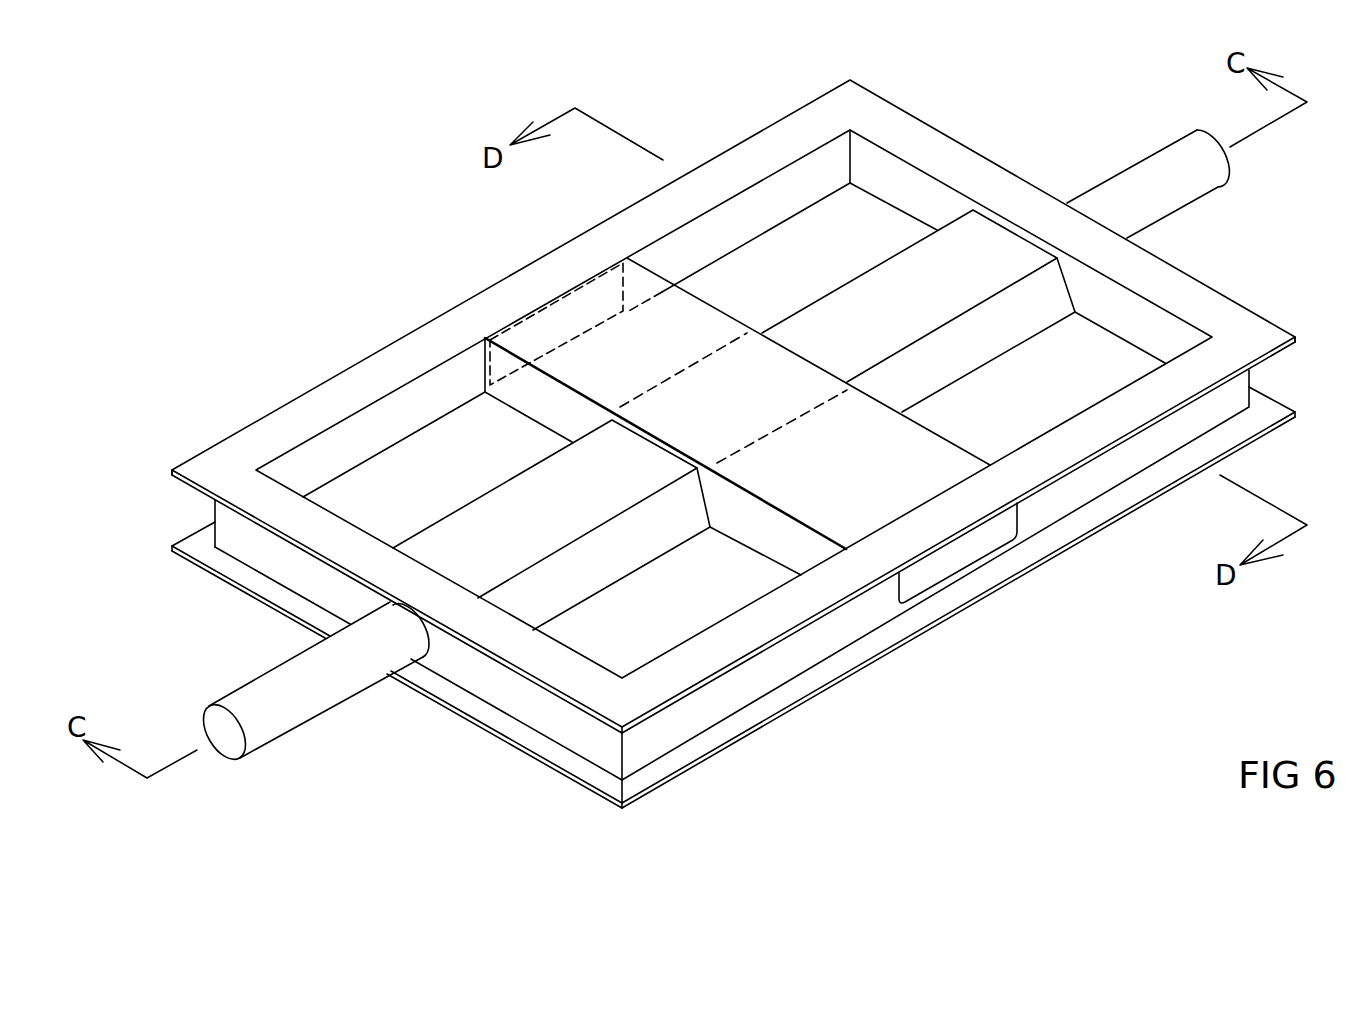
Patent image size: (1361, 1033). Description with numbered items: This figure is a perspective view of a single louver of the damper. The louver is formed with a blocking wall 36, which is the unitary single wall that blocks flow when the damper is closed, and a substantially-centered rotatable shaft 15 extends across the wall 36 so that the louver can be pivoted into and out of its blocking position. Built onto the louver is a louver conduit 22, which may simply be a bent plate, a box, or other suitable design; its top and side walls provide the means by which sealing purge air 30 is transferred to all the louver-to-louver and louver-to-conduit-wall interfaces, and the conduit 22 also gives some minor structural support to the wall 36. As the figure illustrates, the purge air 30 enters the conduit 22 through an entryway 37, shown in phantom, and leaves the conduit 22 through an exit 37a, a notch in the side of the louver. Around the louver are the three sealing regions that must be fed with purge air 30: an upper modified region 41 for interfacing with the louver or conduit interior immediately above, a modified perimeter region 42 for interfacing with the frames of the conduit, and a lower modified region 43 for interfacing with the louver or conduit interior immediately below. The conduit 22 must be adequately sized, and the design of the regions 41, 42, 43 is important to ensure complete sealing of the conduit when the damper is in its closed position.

The rotatable shaft 15 is at (1150, 155).
The louver conduit 22 is at (637, 365).
The purge air 30 is at (503, 272).
The blocking wall 36 is at (808, 237).
The entryway 37 is at (562, 315).
The exit 37a is at (968, 550).
The upper modified region 41 is at (315, 407).
The modified perimeter region 42 is at (928, 147).
The lower modified region 43 is at (773, 625).